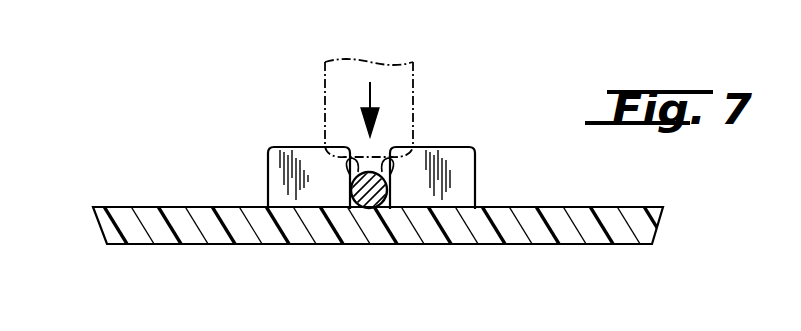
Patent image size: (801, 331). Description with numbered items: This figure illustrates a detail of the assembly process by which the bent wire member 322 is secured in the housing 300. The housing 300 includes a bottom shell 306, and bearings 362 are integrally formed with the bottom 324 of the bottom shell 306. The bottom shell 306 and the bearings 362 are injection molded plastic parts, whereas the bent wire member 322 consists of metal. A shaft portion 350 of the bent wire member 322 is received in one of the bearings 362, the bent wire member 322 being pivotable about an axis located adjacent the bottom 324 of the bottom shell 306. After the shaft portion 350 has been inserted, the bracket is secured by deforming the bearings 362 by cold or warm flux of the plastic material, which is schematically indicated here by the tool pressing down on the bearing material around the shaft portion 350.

The housing 300 is at (616, 252).
The bottom shell 306 is at (523, 241).
The bent wire member 322 is at (352, 175).
The bottom 324 is at (336, 238).
The shaft portion 350 is at (387, 175).
The bearing 362 is at (465, 170).